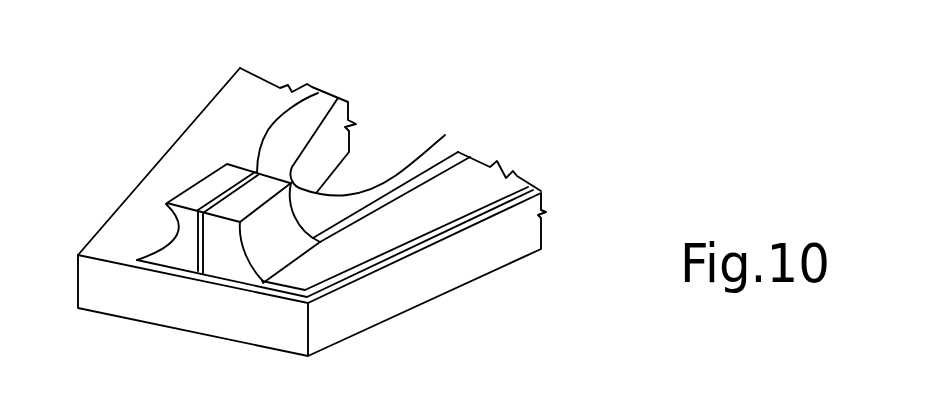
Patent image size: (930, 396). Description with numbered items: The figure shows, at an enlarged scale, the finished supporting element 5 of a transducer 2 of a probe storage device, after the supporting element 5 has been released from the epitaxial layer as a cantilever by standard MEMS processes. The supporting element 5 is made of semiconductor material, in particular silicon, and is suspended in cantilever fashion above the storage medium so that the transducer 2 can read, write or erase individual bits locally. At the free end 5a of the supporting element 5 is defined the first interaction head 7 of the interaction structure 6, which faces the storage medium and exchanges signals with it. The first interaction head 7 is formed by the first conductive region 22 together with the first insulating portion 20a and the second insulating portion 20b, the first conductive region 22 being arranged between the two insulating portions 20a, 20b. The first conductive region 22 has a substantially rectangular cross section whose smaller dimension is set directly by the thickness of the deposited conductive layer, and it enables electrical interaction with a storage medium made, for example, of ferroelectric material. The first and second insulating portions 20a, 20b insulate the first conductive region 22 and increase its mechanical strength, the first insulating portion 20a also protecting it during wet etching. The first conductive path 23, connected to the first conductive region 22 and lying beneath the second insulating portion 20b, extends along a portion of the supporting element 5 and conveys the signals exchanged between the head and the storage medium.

The transducer 2 is at (545, 247).
The supporting element 5 is at (202, 130).
The free end 5a is at (115, 246).
The interaction structure 6 is at (213, 279).
The first interaction head 7 is at (295, 218).
The first insulating portion 20a is at (190, 197).
The second insulating portion 20b is at (277, 243).
The first conductive region 22 is at (322, 94).
The first conductive path 23 is at (470, 174).